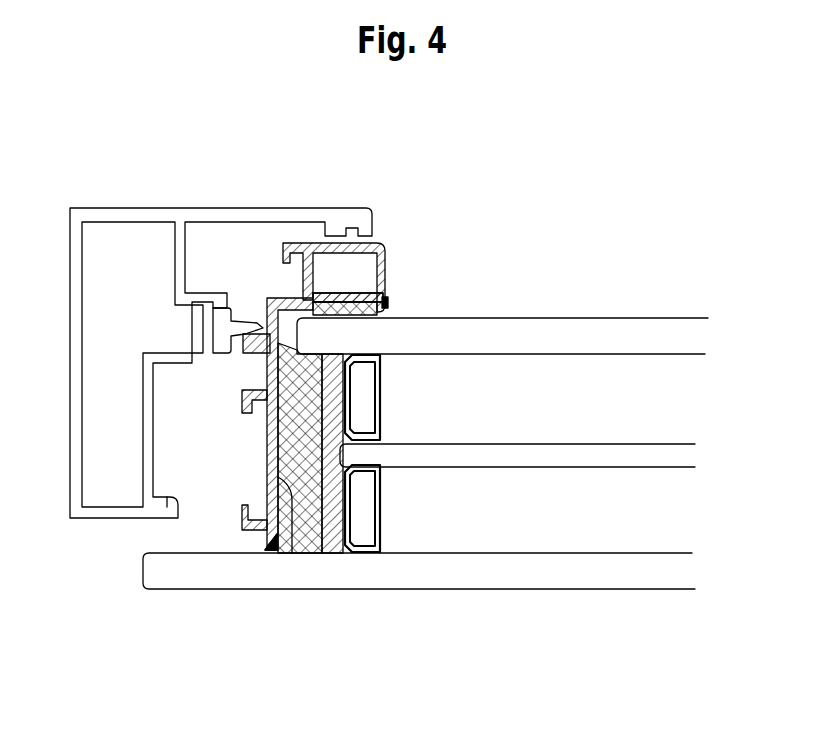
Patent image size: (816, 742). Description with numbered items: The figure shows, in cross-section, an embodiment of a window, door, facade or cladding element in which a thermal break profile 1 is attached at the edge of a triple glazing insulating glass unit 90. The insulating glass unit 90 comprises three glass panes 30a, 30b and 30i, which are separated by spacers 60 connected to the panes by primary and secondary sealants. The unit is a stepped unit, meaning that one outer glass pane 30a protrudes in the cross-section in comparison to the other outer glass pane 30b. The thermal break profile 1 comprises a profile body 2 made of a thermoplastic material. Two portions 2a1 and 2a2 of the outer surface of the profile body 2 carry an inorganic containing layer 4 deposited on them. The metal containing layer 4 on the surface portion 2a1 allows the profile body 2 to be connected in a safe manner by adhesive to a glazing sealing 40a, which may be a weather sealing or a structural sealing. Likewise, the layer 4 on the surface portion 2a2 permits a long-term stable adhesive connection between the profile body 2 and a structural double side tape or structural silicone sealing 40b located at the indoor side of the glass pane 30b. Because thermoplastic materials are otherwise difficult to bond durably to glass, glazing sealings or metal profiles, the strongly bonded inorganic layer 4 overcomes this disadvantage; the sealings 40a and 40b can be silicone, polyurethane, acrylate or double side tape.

The thermal break profile 1 is at (381, 243).
The profile body 2 is at (265, 450).
The outer surface portion 2a1 is at (290, 553).
The outer surface portion 2a2 is at (337, 297).
The inorganic containing layer 4 is at (387, 293).
The outer glass pane 30a is at (656, 566).
The outer glass pane 30b is at (674, 327).
The glass pane 30i is at (658, 456).
The glazing sealing 40a is at (304, 557).
The structural silicone sealing 40b is at (386, 315).
The spacers 60 is at (381, 392).
The insulating glass unit 90 is at (550, 604).